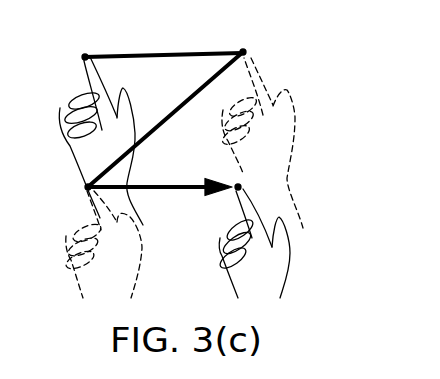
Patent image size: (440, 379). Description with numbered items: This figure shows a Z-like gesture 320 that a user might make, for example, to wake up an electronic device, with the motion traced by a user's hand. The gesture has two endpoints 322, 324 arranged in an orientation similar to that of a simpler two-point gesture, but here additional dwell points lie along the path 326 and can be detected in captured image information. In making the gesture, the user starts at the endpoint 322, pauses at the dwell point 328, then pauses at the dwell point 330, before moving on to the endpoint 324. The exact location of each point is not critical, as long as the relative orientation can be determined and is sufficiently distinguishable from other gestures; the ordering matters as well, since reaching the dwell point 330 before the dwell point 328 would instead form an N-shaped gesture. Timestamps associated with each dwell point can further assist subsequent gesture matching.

The Z-like gesture 320 is at (319, 73).
The endpoint 322 is at (75, 62).
The dwell point 328 is at (246, 38).
The dwell point 330 is at (79, 186).
The endpoint 324 is at (248, 178).
The path 326 is at (172, 194).